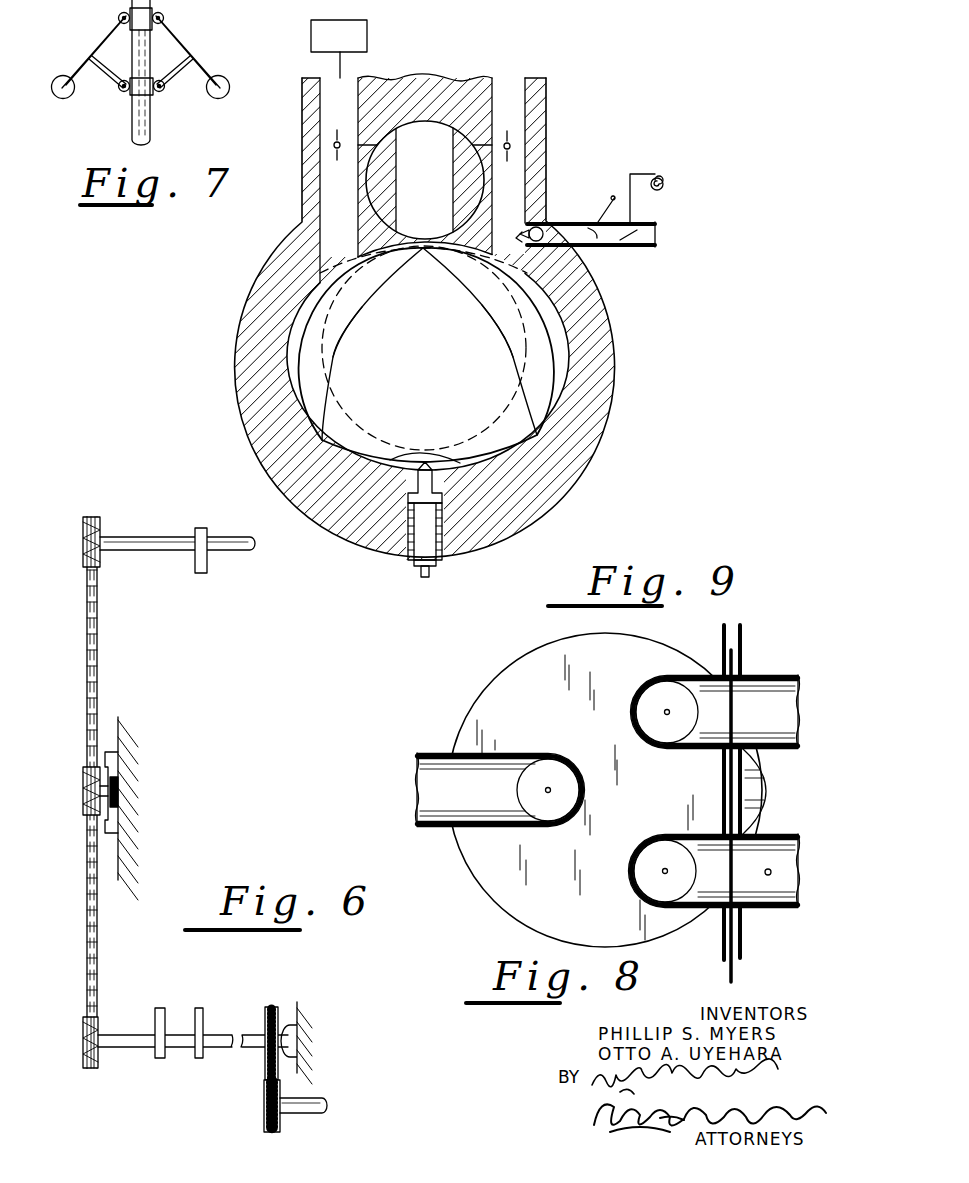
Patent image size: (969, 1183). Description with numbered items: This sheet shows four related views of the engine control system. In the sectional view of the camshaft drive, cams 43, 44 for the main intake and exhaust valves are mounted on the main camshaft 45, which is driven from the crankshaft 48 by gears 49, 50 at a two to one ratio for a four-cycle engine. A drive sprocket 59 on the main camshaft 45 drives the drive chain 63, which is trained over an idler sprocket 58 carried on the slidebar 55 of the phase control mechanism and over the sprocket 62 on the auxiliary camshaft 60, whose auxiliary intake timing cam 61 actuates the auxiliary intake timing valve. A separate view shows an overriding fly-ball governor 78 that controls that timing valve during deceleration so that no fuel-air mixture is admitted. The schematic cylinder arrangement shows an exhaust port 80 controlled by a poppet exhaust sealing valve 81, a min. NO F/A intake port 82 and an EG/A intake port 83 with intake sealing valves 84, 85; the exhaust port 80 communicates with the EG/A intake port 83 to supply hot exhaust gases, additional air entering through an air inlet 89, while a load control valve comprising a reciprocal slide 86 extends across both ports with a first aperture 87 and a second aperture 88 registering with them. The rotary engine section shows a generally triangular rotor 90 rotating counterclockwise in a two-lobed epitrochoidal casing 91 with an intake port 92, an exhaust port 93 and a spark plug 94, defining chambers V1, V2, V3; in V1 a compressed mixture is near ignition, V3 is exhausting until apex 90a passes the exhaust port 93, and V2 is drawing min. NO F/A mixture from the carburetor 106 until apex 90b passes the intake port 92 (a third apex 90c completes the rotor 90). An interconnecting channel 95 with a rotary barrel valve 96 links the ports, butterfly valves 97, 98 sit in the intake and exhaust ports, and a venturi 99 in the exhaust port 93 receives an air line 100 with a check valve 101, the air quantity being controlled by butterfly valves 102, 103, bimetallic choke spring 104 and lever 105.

In FIG. 7, the overriding fly-ball governor 78 is at (183, 48).
In FIG. 9, the carburetor 106 is at (357, 47).
In FIG. 9, the exhaust port 93 is at (513, 95).
In FIG. 9, the butterfly valve 97 is at (334, 144).
In FIG. 9, the butterfly valve 98 is at (511, 146).
In FIG. 9, the interconnecting channel 95 is at (363, 185).
In FIG. 9, the intake port 92 is at (333, 212).
In FIG. 9, the rotary barrel valve 96 is at (439, 190).
In FIG. 9, the venturi 99 is at (528, 223).
In FIG. 9, the lever 105 is at (613, 194).
In FIG. 9, the bimetallic choke spring 104 is at (668, 184).
In FIG. 9, the air line 100 is at (657, 228).
In FIG. 9, the butterfly valve 102 is at (640, 235).
In FIG. 9, the butterfly valve 103 is at (598, 246).
In FIG. 9, the check valve 101 is at (552, 260).
In FIG. 9, the rotor 90 is at (430, 372).
In FIG. 9, the apex of rotor 90a is at (548, 293).
In FIG. 9, the apex of rotor 90b is at (423, 260).
In FIG. 9, the rotor apex seal 90c is at (322, 440).
In FIG. 9, the two-lobed epitrochoidal casing 91 is at (262, 434).
In FIG. 9, the spark plug 94 is at (420, 556).
In FIG. 9, the combustion chamber V1 is at (483, 462).
In FIG. 9, the intake chamber V2 is at (333, 315).
In FIG. 9, the exhaust chamber V3 is at (515, 332).
In FIG. 8, the exhaust port 80 is at (435, 752).
In FIG. 8, the poppet exhaust sealing valve 81 is at (535, 775).
In FIG. 8, the min. NO F/A intake port 82 is at (795, 720).
In FIG. 8, the EG/A intake port 83 is at (798, 875).
In FIG. 8, the intake sealing valve 84 is at (670, 690).
In FIG. 8, the intake sealing valve 85 is at (668, 890).
In FIG. 8, the reciprocal slide 86 is at (735, 965).
In FIG. 8, the first aperture 87 is at (733, 760).
In FIG. 8, the second aperture 88 is at (733, 830).
In FIG. 8, the air inlet 89 is at (771, 876).
In FIG. 6, the cam 43 is at (158, 1008).
In FIG. 6, the cam 44 is at (198, 1008).
In FIG. 6, the main camshaft 45 is at (133, 1048).
In FIG. 6, the crankshaft 48 is at (315, 1098).
In FIG. 6, the gear 49 is at (270, 1007).
In FIG. 6, the gear 50 is at (265, 1113).
In FIG. 6, the slidebar 55 is at (115, 790).
In FIG. 6, the idler sprocket 58 is at (83, 795).
In FIG. 6, the drive sprocket 59 is at (83, 1040).
In FIG. 6, the auxiliary camshaft 60 is at (135, 537).
In FIG. 6, the auxiliary intake timing cam 61 is at (195, 560).
In FIG. 6, the sprocket 62 is at (83, 540).
In FIG. 6, the drive chain 63 is at (87, 655).